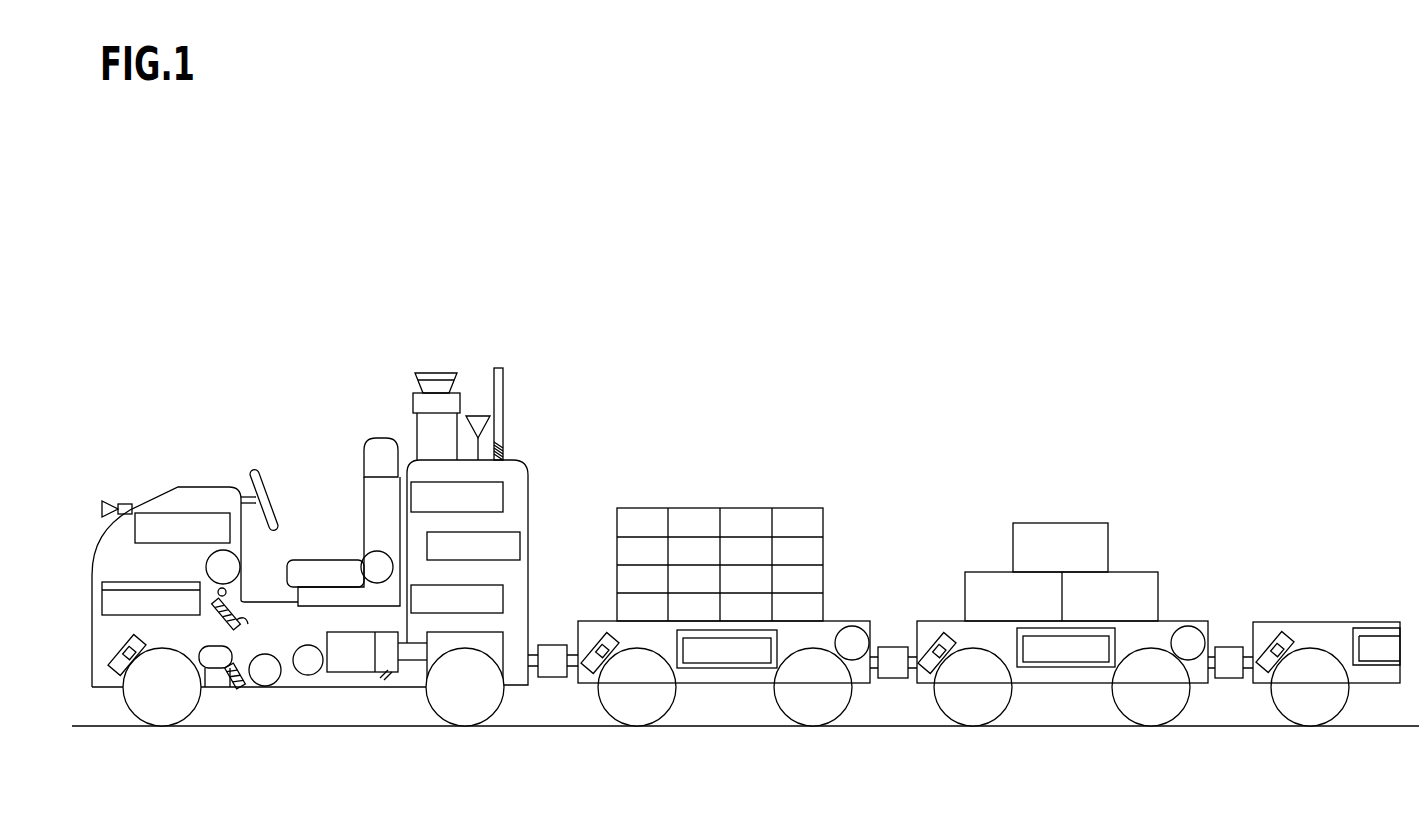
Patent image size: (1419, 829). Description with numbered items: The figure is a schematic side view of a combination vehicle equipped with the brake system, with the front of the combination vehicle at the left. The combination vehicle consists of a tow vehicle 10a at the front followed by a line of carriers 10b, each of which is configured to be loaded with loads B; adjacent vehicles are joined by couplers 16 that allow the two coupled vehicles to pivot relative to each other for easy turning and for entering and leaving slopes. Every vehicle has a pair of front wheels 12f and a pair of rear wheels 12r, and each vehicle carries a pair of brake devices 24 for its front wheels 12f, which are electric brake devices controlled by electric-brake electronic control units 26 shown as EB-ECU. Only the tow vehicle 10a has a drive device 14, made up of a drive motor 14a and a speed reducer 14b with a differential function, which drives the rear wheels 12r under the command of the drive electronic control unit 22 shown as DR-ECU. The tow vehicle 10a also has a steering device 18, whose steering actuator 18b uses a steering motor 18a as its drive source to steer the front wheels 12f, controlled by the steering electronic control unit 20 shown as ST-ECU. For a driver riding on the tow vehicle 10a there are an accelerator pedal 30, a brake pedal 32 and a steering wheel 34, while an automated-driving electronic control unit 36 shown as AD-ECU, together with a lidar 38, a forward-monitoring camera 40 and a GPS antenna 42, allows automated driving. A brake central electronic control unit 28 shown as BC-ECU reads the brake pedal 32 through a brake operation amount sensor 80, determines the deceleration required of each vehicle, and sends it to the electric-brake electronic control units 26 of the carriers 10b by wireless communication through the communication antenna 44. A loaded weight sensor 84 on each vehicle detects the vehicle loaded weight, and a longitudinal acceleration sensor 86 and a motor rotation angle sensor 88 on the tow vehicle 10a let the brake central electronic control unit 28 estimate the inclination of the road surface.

The tow vehicle 10a is at (175, 360).
The carrier 10b is at (708, 390).
The front wheels 12f is at (156, 714).
The rear wheels 12r is at (450, 714).
The drive device 14 is at (388, 678).
The drive motor 14a is at (348, 674).
The speed reducer 14b is at (430, 645).
The coupler 16 is at (553, 680).
The steering device 18 is at (232, 700).
The steering motor 18a is at (240, 688).
The steering actuator 18b is at (205, 682).
The steering electronic control unit 20 is at (171, 513).
The drive electronic control unit 22 is at (505, 610).
The brake device 24 is at (114, 670).
The electric-brake electronic control unit 26 is at (118, 616).
The brake central electronic control unit 28 is at (520, 558).
The accelerator pedal 30 is at (246, 630).
The brake pedal 32 is at (262, 608).
The steering wheel 34 is at (263, 470).
The automated-driving electronic control unit 36 is at (505, 503).
The lidar 38 is at (413, 402).
The camera 40 is at (120, 501).
The GPS antenna 42 is at (474, 416).
The communication antenna 44 is at (504, 390).
The brake operation amount sensor 80 is at (241, 540).
The loaded weight sensor 84 is at (364, 556).
The longitudinal acceleration sensor 86 is at (264, 687).
The motor rotation angle sensor 88 is at (311, 676).
The load B is at (745, 545).